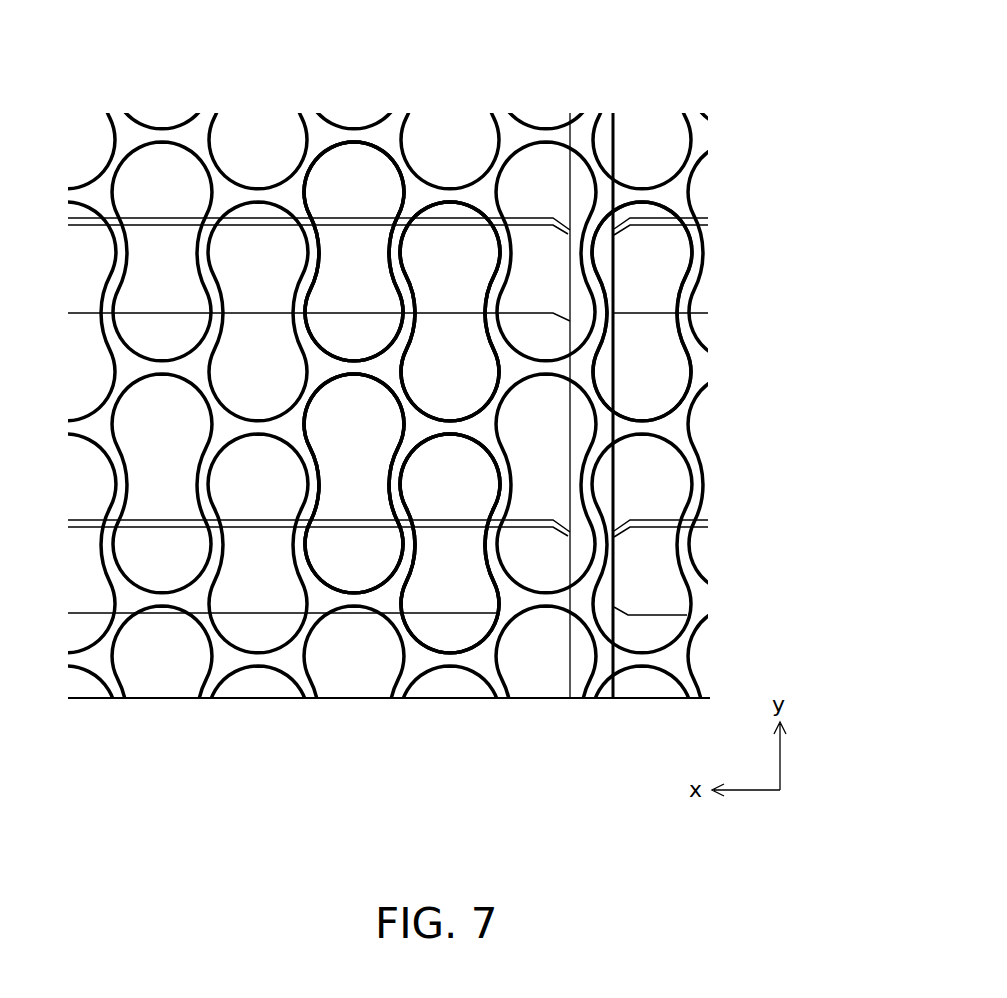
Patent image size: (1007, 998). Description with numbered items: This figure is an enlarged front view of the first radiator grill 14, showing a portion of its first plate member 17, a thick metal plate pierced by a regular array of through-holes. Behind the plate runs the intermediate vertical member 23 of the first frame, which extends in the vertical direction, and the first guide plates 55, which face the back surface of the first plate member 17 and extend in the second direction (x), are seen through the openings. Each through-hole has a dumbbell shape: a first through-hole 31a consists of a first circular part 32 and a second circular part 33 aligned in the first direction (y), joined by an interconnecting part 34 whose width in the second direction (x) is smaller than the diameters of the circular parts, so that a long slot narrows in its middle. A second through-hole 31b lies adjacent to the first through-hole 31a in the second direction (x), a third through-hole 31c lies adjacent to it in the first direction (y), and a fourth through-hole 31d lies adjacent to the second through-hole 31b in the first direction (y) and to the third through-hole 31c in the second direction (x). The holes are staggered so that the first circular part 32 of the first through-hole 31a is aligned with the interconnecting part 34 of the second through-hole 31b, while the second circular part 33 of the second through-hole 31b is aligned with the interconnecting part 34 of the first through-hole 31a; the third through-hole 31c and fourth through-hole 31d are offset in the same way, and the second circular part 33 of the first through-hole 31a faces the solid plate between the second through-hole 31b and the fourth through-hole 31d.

The first radiator grill 14 is at (402, 442).
The first plate member 17 is at (678, 195).
The intermediate vertical member 23 is at (570, 662).
The first through-hole 31a is at (450, 243).
The second through-hole 31b is at (355, 168).
The third through-hole 31c is at (438, 600).
The fourth through-hole 31d is at (345, 568).
The first circular part 32 is at (325, 164).
The second circular part 33 is at (327, 353).
The interconnecting part 34 is at (390, 257).
The first guide plate 55 is at (662, 265).